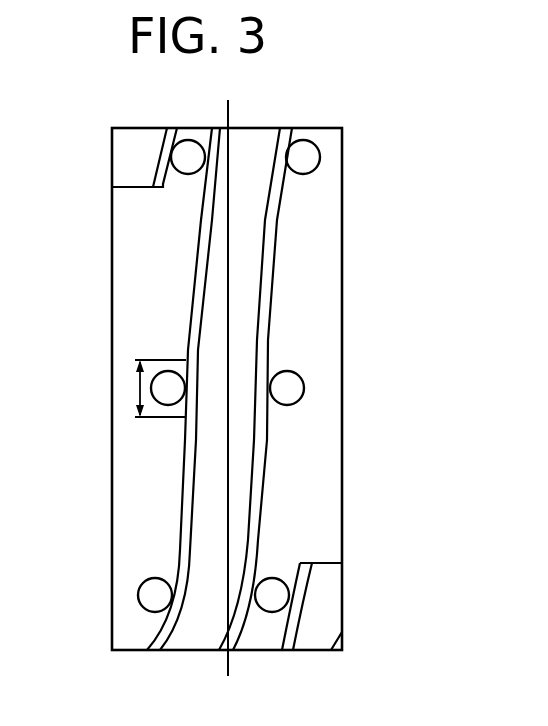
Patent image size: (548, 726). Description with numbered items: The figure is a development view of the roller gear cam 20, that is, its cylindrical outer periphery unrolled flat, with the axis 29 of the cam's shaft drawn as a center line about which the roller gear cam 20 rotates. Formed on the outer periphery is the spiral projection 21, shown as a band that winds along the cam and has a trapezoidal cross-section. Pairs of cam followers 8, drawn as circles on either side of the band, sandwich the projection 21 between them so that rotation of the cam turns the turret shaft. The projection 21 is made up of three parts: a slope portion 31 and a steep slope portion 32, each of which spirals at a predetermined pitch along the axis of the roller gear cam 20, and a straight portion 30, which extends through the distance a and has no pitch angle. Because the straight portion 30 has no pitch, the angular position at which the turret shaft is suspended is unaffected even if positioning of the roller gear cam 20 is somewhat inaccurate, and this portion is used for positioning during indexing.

The cam follower 8 is at (148, 596).
The roller gear cam 20 is at (342, 303).
The spiral projection 21 is at (190, 627).
The axis 29 is at (229, 116).
The straight portion 30 is at (262, 378).
The slope portion 31 is at (256, 513).
The steep slope portion 32 is at (283, 142).
The distance a is at (153, 388).